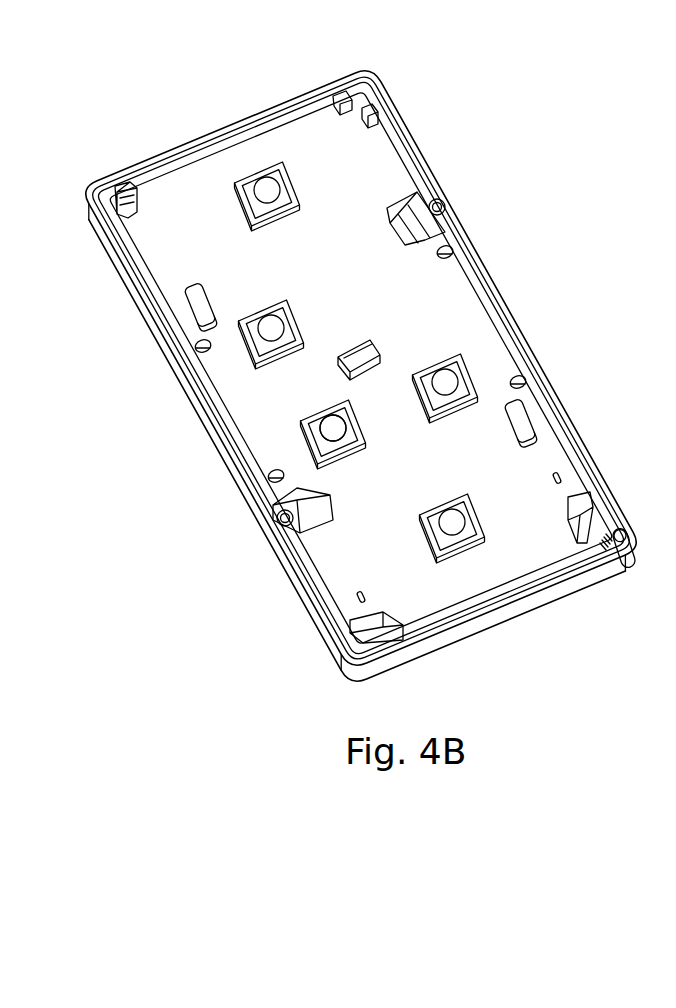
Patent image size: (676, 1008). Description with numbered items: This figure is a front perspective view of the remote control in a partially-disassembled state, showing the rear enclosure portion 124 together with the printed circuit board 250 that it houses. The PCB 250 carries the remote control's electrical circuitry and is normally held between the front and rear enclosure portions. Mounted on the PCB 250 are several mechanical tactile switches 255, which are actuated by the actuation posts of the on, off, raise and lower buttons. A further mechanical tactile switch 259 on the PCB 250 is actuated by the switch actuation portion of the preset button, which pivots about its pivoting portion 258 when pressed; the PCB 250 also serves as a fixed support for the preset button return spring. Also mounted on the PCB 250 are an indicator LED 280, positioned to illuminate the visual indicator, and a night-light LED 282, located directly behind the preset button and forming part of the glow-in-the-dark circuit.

The rear enclosure portion 124 is at (292, 592).
The printed circuit board 250 is at (375, 178).
The mechanical tactile switches 255 is at (267, 190).
The pivoting portion 258 is at (627, 550).
The mechanical tactile switch 259 is at (333, 428).
The indicator LED 280 is at (130, 204).
The night-light LED 282 is at (378, 350).